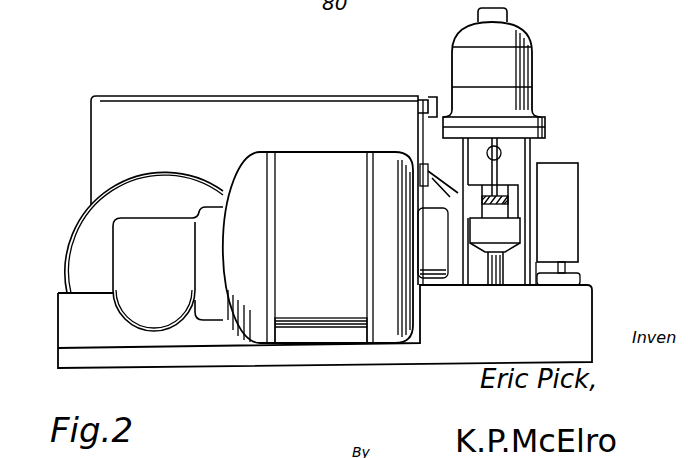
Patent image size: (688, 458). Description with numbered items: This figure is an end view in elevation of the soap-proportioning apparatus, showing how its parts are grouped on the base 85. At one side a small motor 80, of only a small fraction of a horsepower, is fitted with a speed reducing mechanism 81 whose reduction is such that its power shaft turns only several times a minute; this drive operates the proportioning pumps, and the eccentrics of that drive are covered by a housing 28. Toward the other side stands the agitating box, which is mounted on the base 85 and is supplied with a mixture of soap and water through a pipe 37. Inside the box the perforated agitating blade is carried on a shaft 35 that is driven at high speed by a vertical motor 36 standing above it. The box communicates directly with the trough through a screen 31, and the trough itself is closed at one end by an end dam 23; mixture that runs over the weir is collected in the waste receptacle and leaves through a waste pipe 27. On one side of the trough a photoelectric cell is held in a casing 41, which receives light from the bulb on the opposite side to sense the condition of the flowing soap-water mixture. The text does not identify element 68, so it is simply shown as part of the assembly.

The base 85 is at (582, 312).
The housing 28 is at (80, 248).
The speed reducing mechanism 81 is at (156, 222).
The motor 80 is at (323, 153).
The terminal 68 is at (432, 97).
The vertical motor 36 is at (530, 80).
The pipe 37 is at (505, 153).
The shaft 35 is at (500, 170).
The screen 31 is at (507, 189).
The end dam 23 is at (498, 208).
The waste pipe 27 is at (503, 273).
The casing 41 is at (558, 224).